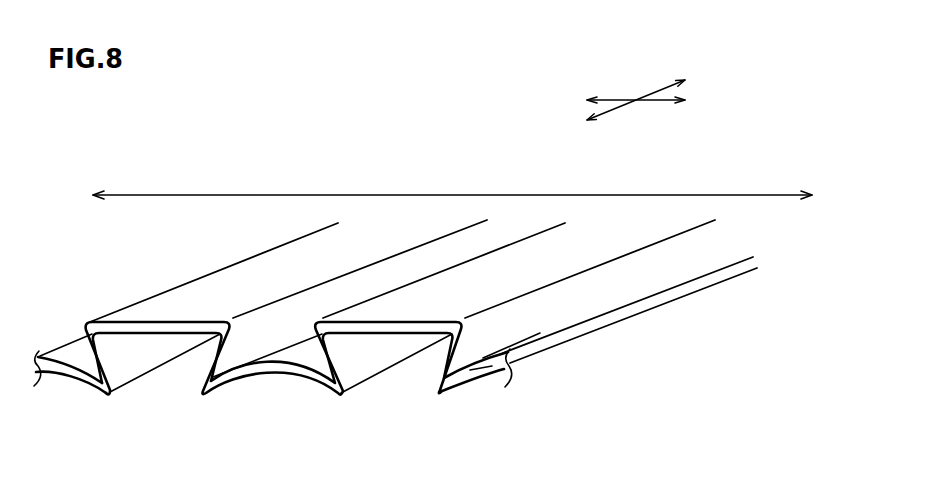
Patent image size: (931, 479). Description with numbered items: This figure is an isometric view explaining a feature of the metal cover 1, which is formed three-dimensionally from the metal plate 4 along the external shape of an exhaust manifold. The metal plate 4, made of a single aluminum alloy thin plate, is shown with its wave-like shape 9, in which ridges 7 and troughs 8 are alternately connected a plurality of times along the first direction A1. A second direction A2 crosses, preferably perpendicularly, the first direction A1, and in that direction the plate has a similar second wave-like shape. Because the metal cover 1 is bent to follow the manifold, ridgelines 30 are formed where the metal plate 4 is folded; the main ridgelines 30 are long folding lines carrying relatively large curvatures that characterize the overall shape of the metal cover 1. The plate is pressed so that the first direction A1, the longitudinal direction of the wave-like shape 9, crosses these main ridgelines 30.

The metal cover 1 is at (395, 275).
The metal plate 4 is at (78, 355).
The ridge 7 is at (205, 263).
The trough 8 is at (273, 290).
The wave-like shape 9 is at (288, 204).
The ridgeline 30 is at (745, 192).
The first direction A1 is at (617, 102).
The second direction A2 is at (615, 99).